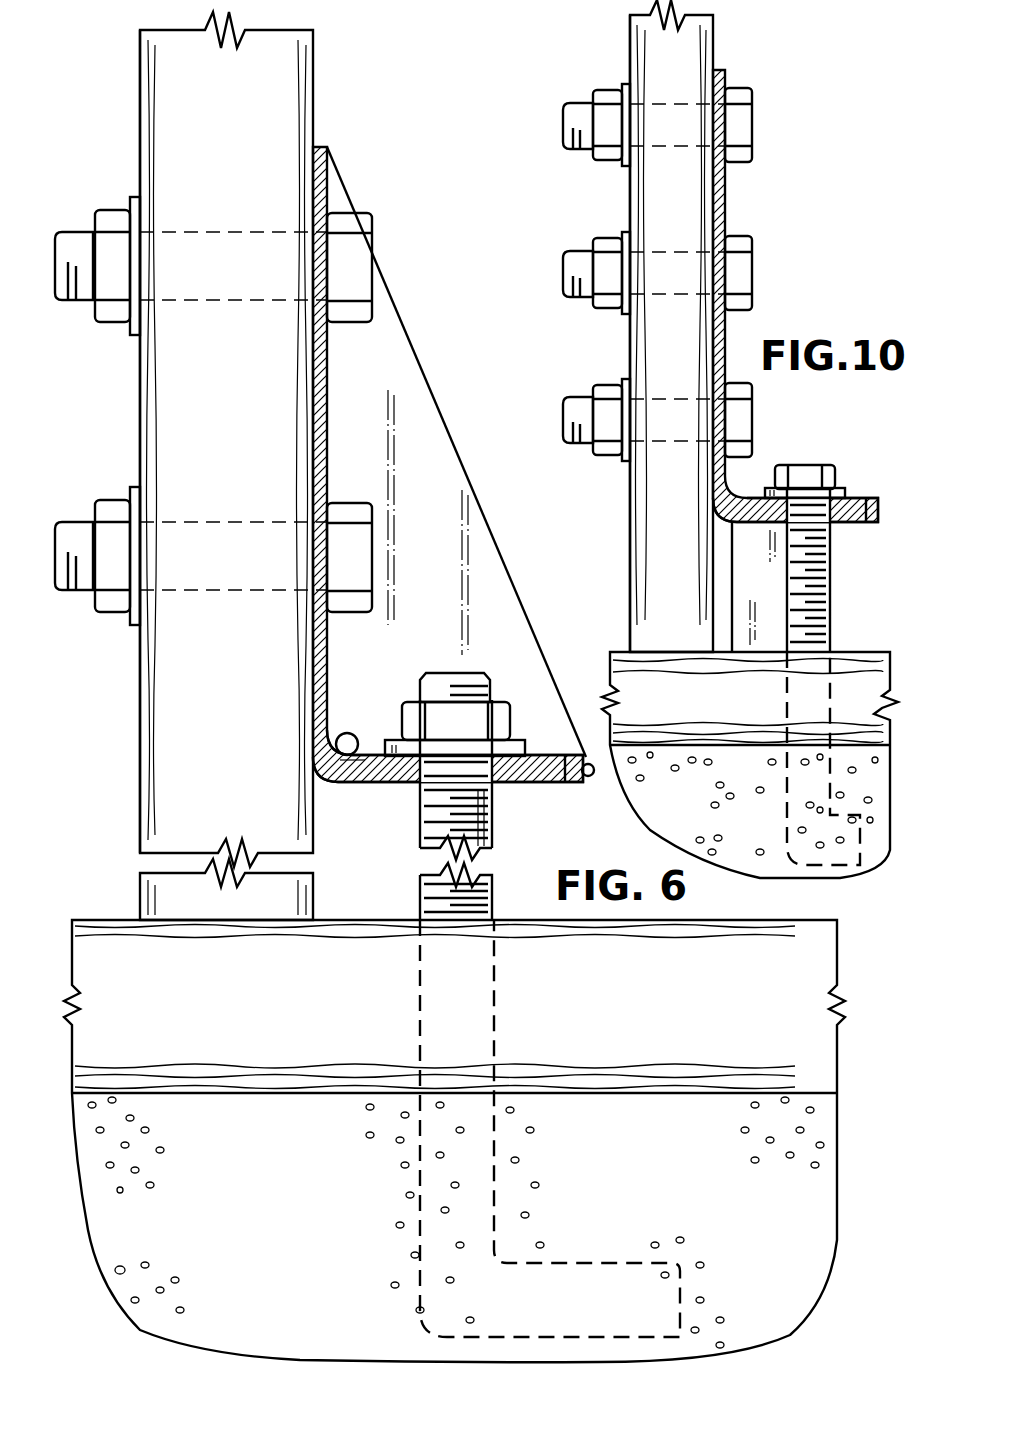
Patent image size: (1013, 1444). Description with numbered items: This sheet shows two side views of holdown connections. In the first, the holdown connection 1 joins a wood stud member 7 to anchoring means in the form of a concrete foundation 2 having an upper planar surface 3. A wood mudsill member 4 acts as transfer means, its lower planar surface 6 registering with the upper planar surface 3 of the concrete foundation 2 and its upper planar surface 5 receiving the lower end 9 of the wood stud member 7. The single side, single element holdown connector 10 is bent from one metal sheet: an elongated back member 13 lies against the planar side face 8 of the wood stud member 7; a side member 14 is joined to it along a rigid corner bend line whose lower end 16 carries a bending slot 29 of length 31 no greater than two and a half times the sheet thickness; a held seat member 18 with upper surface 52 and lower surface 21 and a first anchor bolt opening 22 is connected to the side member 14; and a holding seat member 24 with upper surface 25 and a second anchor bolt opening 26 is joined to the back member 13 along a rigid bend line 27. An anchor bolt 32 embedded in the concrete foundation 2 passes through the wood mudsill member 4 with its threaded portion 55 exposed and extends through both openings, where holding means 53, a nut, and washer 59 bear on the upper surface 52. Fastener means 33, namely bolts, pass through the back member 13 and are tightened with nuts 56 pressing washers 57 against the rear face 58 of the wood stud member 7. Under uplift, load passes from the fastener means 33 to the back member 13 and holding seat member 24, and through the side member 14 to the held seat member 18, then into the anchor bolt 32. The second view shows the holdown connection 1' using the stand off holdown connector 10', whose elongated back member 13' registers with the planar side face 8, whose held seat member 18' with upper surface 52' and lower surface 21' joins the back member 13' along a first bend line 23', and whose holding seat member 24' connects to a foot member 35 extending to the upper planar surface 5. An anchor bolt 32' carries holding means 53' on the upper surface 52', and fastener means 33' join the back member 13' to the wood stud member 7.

In FIG. 6, the holdown connection 1 is at (71, 424).
In FIG. 10, the holdown connection 1' is at (808, 137).
In FIG. 6, the concrete foundation 2 is at (650, 1208).
In FIG. 10, the concrete foundation 2 is at (692, 820).
In FIG. 6, the upper planar surface 3 is at (710, 1088).
In FIG. 10, the upper planar surface 3 is at (852, 737).
In FIG. 6, the wood mudsill member 4 is at (838, 1072).
In FIG. 10, the wood mudsill member 4 is at (846, 650).
In FIG. 6, the upper planar surface 5 is at (780, 915).
In FIG. 10, the upper planar surface 5 is at (860, 654).
In FIG. 6, the lower planar surface 6 is at (606, 1092).
In FIG. 10, the lower planar surface 6 is at (745, 756).
In FIG. 6, the wood stud member 7 is at (137, 66).
In FIG. 10, the wood stud member 7 is at (622, 30).
In FIG. 6, the planar side face 8 is at (313, 80).
In FIG. 10, the planar side face 8 is at (715, 45).
In FIG. 6, the lower end 9 is at (228, 925).
In FIG. 10, the lower end 9 is at (668, 655).
In FIG. 6, the single side, single element holdown connector 10 is at (456, 452).
In FIG. 10, the single side, single element stand off holdown connector 10' is at (789, 453).
In FIG. 6, the elongated back member 13 is at (448, 464).
In FIG. 10, the elongated back member 13' is at (795, 296).
In FIG. 6, the side member 14 is at (440, 555).
In FIG. 6, the lower end 16 is at (331, 742).
In FIG. 6, the held seat member 18 is at (465, 695).
In FIG. 10, the held seat member 18' is at (815, 453).
In FIG. 6, the lower surface 21 is at (585, 724).
In FIG. 10, the lower surface 21' is at (884, 471).
In FIG. 6, the first anchor bolt opening 22 is at (446, 686).
In FIG. 10, the first bend line 23' is at (697, 518).
In FIG. 6, the holding seat member 24 is at (477, 780).
In FIG. 10, the holding seat member 24' is at (786, 570).
In FIG. 6, the upper surface 25 is at (584, 778).
In FIG. 6, the second anchor bolt opening 26 is at (428, 800).
In FIG. 6, the rigid bend line 27 is at (312, 776).
In FIG. 6, the bending slot 29 is at (352, 742).
In FIG. 6, the length 31 is at (370, 772).
In FIG. 6, the anchor bolt 32 is at (550, 1128).
In FIG. 10, the anchor bolt 32' is at (830, 698).
In FIG. 6, the fastener means 33 is at (72, 378).
In FIG. 10, the fastener means 33' is at (557, 253).
In FIG. 10, the foot member 35 is at (776, 648).
In FIG. 6, the upper surface 52 is at (468, 711).
In FIG. 10, the upper surface 52' is at (800, 448).
In FIG. 6, the holding means 53 is at (487, 652).
In FIG. 10, the holding means 53' is at (816, 450).
In FIG. 6, the threaded portion 55 is at (472, 893).
In FIG. 6, the nuts 56 is at (116, 212).
In FIG. 10, the nuts 56 is at (600, 160).
In FIG. 6, the washers 57 is at (134, 330).
In FIG. 10, the washers 57 is at (623, 86).
In FIG. 6, the rear face 58 is at (140, 706).
In FIG. 10, the rear face 58 is at (630, 497).
In FIG. 6, the washer 59 is at (412, 745).
In FIG. 10, the washer 59 is at (772, 488).